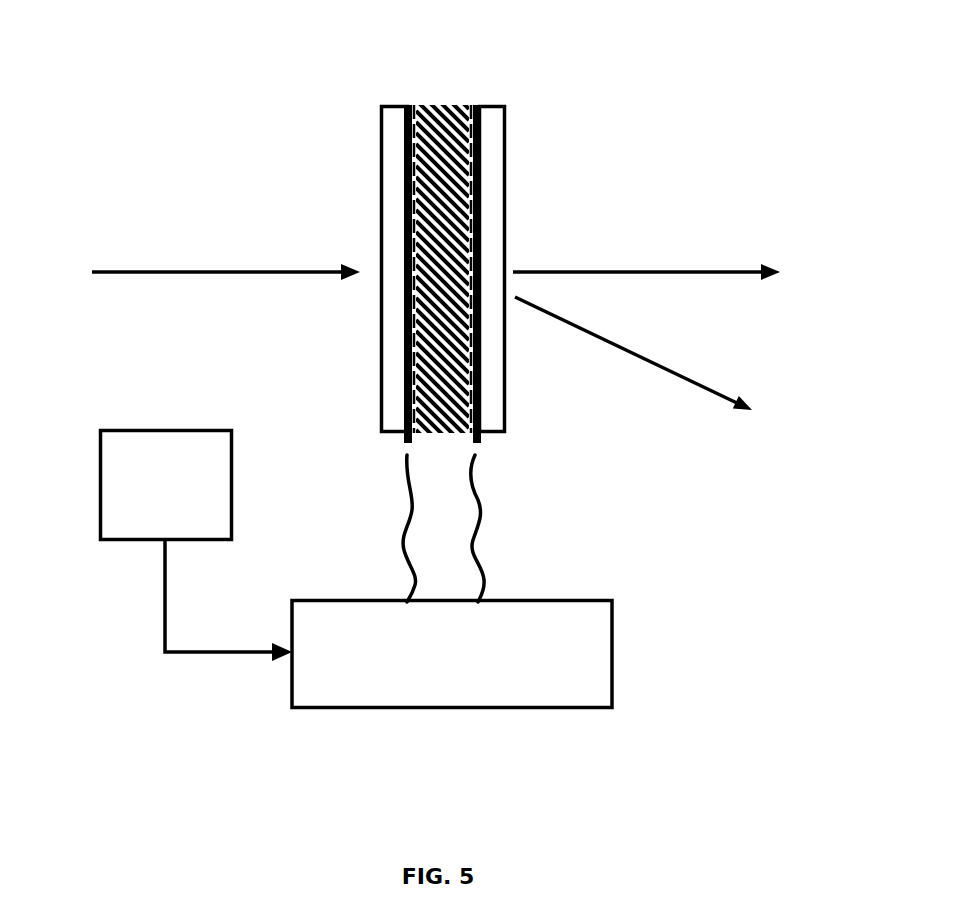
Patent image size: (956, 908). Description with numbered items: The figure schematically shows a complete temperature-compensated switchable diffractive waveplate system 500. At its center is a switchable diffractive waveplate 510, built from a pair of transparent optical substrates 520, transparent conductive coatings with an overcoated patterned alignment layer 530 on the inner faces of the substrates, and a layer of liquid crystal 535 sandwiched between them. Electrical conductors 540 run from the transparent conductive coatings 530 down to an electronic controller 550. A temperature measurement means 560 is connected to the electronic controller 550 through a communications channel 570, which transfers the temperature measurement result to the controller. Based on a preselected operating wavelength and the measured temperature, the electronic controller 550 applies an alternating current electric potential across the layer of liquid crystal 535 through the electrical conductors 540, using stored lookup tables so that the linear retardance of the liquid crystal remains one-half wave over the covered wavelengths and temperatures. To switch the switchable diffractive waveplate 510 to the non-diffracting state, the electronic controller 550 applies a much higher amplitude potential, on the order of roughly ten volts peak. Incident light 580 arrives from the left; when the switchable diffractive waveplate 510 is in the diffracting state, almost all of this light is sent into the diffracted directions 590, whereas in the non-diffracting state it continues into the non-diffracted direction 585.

The temperature-compensated switchable diffractive waveplate system 500 is at (414, 777).
The switchable diffractive waveplate 510 is at (268, 138).
The transparent optical substrates 520 is at (372, 226).
The transparent conductive coatings with overcoated patterned alignment layer 530 is at (392, 448).
The layer of liquid crystal 535 is at (441, 89).
The electrical conductors 540 is at (392, 520).
The electronic controller 550 is at (622, 657).
The temperature measurement means 560 is at (197, 420).
The communications channel 570 is at (212, 665).
The incident light 580 is at (224, 254).
The non-diffracted direction 585 is at (631, 257).
The diffracted directions 590 is at (606, 364).